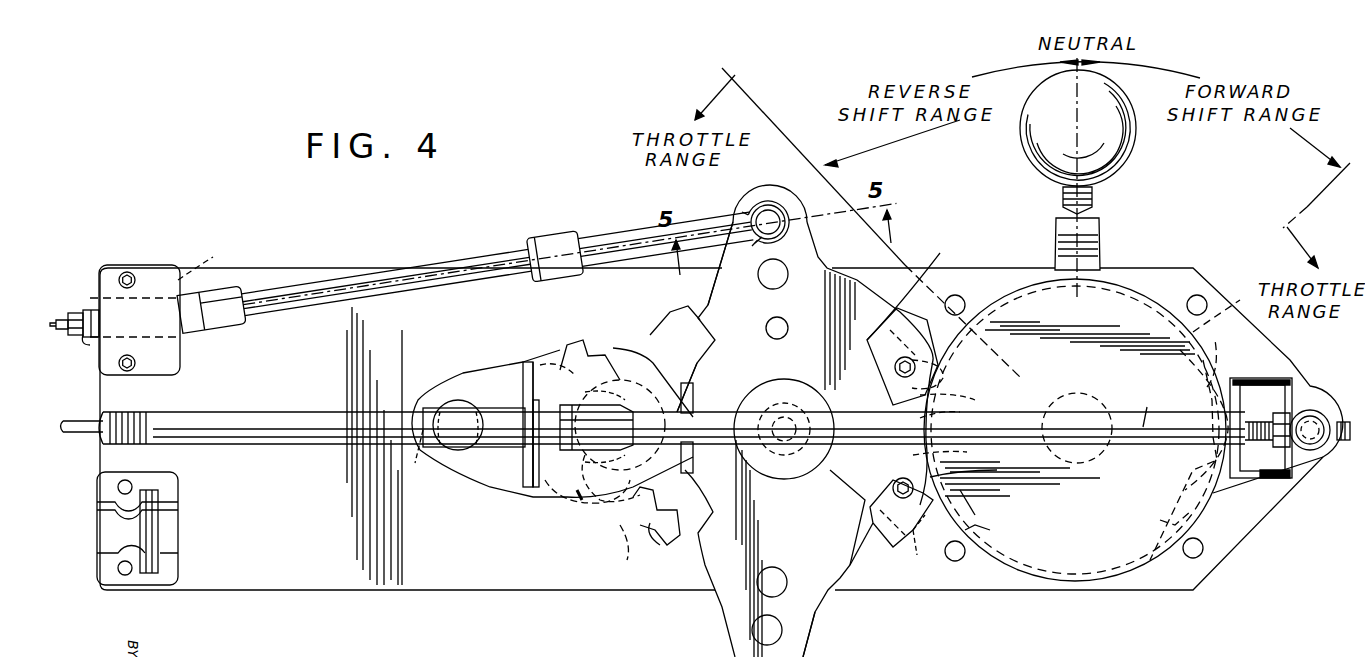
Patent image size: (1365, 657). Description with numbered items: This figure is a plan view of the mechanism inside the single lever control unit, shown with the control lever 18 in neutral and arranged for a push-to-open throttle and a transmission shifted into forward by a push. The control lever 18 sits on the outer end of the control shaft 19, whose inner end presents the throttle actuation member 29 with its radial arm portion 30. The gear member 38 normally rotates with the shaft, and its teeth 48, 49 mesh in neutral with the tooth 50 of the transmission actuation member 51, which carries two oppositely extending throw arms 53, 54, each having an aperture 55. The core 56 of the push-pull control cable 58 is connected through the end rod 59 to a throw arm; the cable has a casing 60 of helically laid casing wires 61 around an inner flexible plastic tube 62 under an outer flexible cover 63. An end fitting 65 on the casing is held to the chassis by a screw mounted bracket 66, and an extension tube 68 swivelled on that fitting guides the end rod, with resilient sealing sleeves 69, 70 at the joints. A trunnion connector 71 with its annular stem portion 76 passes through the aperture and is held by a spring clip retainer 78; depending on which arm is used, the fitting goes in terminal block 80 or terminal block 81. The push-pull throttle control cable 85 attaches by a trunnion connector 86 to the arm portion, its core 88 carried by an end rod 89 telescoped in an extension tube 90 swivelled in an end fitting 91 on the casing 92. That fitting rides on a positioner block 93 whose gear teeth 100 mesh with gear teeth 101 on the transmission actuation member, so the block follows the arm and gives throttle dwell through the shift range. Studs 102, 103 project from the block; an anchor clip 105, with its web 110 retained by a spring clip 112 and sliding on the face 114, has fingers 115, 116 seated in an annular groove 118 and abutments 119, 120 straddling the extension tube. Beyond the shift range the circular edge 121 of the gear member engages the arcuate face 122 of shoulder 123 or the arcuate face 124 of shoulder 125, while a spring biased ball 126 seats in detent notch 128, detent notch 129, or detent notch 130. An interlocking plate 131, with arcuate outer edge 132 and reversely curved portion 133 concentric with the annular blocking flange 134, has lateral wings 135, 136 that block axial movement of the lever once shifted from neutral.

The control lever 18 is at (1105, 225).
The control shaft 19 is at (1090, 397).
The throttle actuation member 29 is at (1030, 543).
The throttle actuating arm portion 30 is at (1270, 463).
The gear member 38 is at (1060, 543).
The tooth 48 is at (965, 390).
The tooth 49 is at (952, 451).
The tooth 50 is at (960, 412).
The transmission actuation member 51 is at (805, 421).
The throw arm 53 is at (812, 250).
The throw arm 54 is at (807, 620).
The aperture 55 is at (780, 283).
The core 56 is at (57, 313).
The push-pull control cable 58 is at (84, 300).
The end rod 59 is at (661, 212).
The casing 60 is at (90, 353).
The casing wires 61 is at (87, 340).
The inner flexible plastic tube 62 is at (88, 338).
The outer flexible cover 63 is at (84, 318).
The end fitting 65 is at (97, 302).
The screw mounted bracket 66 is at (176, 363).
The extension tube 68 is at (382, 253).
The resilient sealing sleeve 69 is at (235, 325).
The resilient sealing sleeve 70 is at (551, 229).
The trunnion connector 71 is at (769, 202).
The annular stem portion 76 is at (753, 215).
The spring clip retainer 78 is at (744, 254).
The terminal block 80 is at (172, 498).
The terminal block 81 is at (203, 257).
The push-pull throttle control cable 85 is at (212, 402).
The trunnion connector 86 is at (1325, 468).
The core 88 is at (80, 433).
The end rod 89 is at (1145, 403).
The extension tube 90 is at (723, 417).
The end fitting 91 is at (415, 463).
The casing 92 is at (278, 407).
The positioner block 93 is at (487, 367).
The gear teeth 100 is at (625, 535).
The gear teeth 101 is at (657, 547).
The stud 102 is at (580, 450).
The stud 103 is at (460, 403).
The anchor clip 105 is at (575, 497).
The web 110 is at (593, 483).
The spring clip 112 is at (668, 397).
The face 114 is at (472, 465).
The finger 115 is at (532, 362).
The finger 116 is at (532, 482).
The annular groove 118 is at (512, 397).
The abutment 119 is at (697, 413).
The abutment 120 is at (687, 460).
The circular edge 121 is at (1103, 578).
The arcuate face 122 is at (925, 556).
The shoulder 123 is at (987, 506).
The arcuate face 124 is at (916, 285).
The shoulder 125 is at (960, 370).
The spring biased ball 126 is at (1195, 455).
The detent notch 128 is at (1200, 334).
The detent notch 129 is at (1207, 387).
The detent notch 130 is at (1175, 525).
The interlocking plate 131 is at (877, 497).
The arcuate outer edge 132 is at (930, 525).
The reversely curved portion 133 is at (982, 469).
The annular blocking flange 134 is at (996, 530).
The lateral wing 135 is at (874, 556).
The lateral wing 136 is at (948, 306).